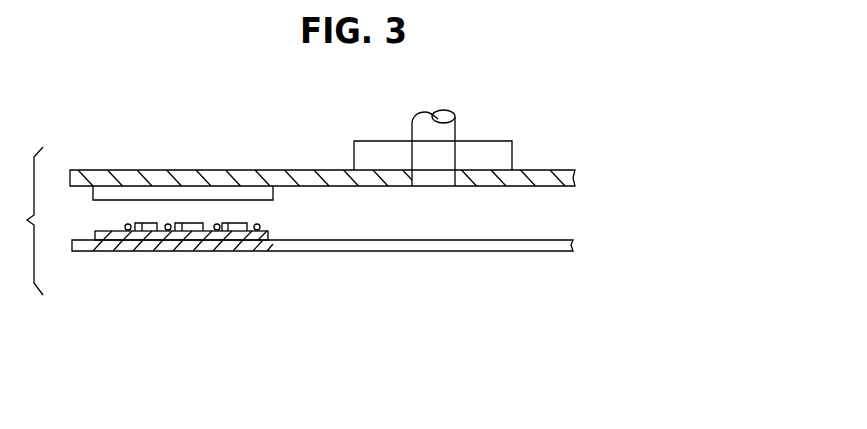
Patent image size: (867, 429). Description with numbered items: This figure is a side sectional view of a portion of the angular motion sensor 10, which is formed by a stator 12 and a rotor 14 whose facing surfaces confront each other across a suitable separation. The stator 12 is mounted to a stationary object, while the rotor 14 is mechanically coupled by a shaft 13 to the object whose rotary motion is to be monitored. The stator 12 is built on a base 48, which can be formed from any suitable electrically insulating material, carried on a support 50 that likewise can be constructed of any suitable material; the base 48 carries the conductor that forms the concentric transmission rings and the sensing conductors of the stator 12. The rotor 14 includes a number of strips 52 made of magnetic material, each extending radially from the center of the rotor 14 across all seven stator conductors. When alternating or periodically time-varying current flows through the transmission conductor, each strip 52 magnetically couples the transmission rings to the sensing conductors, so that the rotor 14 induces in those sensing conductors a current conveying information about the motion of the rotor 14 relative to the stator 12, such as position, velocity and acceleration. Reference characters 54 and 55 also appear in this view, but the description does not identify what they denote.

The angular motion sensor 10 is at (130, 145).
The stator 12 is at (310, 250).
The shaft 13 is at (448, 130).
The rotor 14 is at (313, 170).
The base 48 is at (103, 233).
The support 50 is at (82, 252).
The magnetic strip 52 is at (250, 192).
The conductor 54 is at (246, 415).
The conductor 55 is at (441, 417).